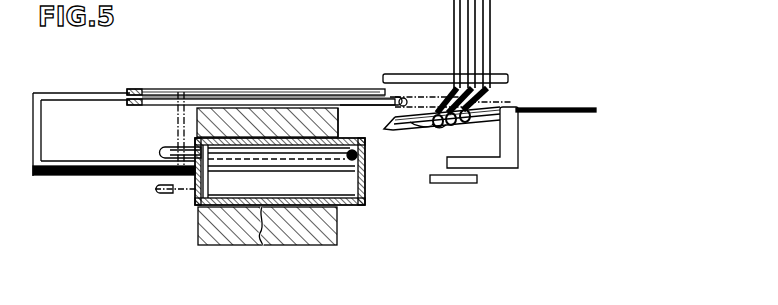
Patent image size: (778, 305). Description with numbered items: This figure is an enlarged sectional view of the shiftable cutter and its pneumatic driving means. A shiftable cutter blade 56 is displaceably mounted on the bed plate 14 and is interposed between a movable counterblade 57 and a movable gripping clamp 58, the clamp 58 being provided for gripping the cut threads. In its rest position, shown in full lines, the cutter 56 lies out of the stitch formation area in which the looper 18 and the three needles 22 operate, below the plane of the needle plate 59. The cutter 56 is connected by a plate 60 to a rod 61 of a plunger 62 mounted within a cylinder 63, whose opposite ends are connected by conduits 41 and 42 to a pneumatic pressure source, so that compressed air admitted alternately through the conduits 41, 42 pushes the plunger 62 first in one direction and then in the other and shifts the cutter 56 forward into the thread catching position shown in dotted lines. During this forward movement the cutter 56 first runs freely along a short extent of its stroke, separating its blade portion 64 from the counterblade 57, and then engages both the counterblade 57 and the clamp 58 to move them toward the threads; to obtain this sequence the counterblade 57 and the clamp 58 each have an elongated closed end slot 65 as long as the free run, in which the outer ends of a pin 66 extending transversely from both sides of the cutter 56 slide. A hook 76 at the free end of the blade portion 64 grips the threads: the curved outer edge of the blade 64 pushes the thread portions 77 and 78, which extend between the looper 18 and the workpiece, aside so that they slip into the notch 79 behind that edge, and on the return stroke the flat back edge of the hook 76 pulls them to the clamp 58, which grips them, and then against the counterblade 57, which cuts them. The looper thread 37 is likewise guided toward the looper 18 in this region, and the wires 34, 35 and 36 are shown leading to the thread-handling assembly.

The bed plate 14 is at (262, 232).
The looper 18 is at (514, 141).
The needles 22 is at (456, 20).
The wire 34 is at (459, 63).
The wire 35 is at (478, 70).
The wire 36 is at (488, 68).
The looper thread 37 is at (545, 108).
The conduit 41 is at (168, 148).
The conduit 42 is at (163, 200).
The shiftable cutter blade 56 is at (82, 93).
The movable counterblade 57 is at (301, 90).
The movable gripping clamp 58 is at (265, 108).
The needle plate 59 is at (384, 80).
The plate 60 is at (38, 135).
The rod 61 is at (70, 176).
The plunger 62 is at (212, 183).
The cylinder 63 is at (327, 196).
The blade portion 64 is at (379, 103).
The elongated closed end slot 65 is at (191, 104).
The pin 66 is at (147, 90).
The hook 76 is at (404, 98).
The thread portion 77 is at (463, 125).
The thread portion 78 is at (386, 134).
The notch 79 is at (362, 97).